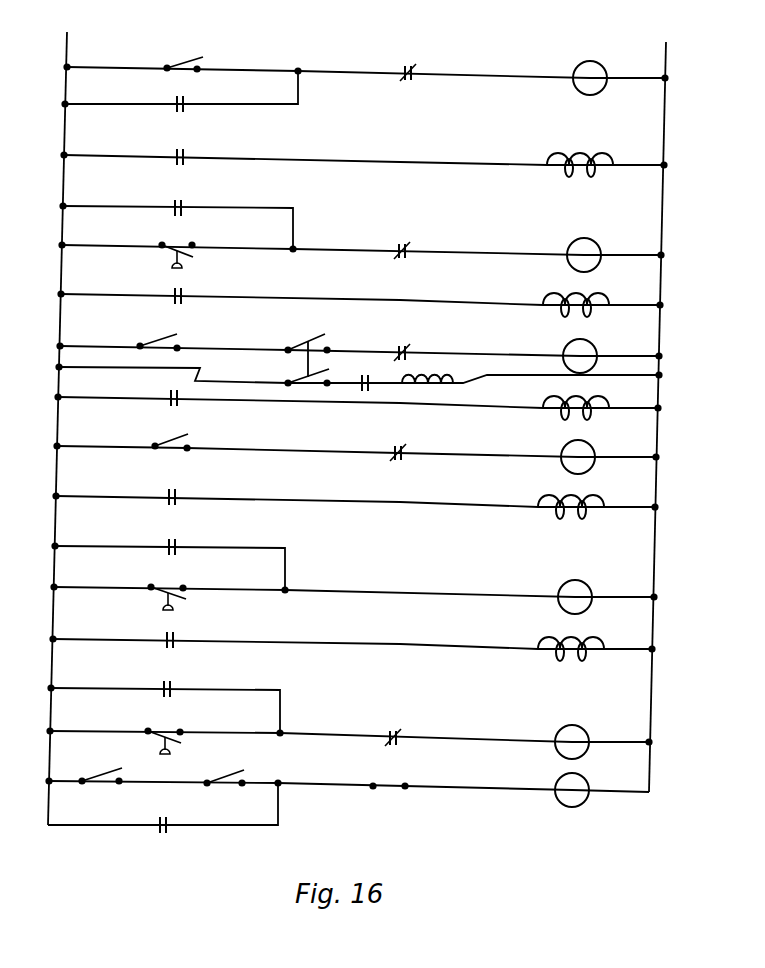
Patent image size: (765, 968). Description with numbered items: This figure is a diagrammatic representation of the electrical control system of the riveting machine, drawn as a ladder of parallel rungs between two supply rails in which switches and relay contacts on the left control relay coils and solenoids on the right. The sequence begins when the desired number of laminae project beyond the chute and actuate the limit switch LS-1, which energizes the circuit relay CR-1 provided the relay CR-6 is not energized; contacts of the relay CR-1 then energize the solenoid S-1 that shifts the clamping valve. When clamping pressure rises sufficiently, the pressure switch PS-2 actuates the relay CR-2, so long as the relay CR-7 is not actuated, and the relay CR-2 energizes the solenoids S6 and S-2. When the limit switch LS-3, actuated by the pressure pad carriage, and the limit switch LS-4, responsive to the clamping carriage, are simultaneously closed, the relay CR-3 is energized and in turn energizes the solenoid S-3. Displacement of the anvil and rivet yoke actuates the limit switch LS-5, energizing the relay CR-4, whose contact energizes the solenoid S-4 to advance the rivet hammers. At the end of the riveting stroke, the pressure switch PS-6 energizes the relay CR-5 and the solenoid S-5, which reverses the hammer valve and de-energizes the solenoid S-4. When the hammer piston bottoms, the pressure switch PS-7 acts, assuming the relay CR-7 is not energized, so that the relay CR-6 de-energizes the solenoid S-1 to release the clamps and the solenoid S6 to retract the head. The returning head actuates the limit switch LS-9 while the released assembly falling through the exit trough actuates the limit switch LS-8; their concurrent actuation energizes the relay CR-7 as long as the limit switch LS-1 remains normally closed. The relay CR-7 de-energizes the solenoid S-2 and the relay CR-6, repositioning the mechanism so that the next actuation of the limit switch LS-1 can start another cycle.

The limit switch LS-1 is at (285, 412).
The limit switch LS-3 is at (146, 338).
The limit switch LS-4 is at (296, 356).
The limit switch LS-5 is at (153, 438).
The limit switch LS-8 is at (223, 772).
The limit switch LS-9 is at (96, 769).
The pressure switch PS-2 is at (159, 246).
The pressure switch PS-6 is at (148, 587).
The pressure switch PS-7 is at (144, 731).
The circuit relay CR-1 is at (377, 99).
The relay CR-2 is at (374, 288).
The relay CR-3 is at (354, 368).
The relay CR-4 is at (353, 469).
The relay CR-5 is at (350, 539).
The relay CR-6 is at (348, 399).
The relay CR-7 is at (349, 528).
The solenoid S-1 is at (580, 154).
The solenoid S-2 is at (554, 298).
The solenoid S-3 is at (554, 400).
The solenoid S-4 is at (548, 500).
The solenoid S-5 is at (544, 642).
The solenoid S6 is at (427, 371).